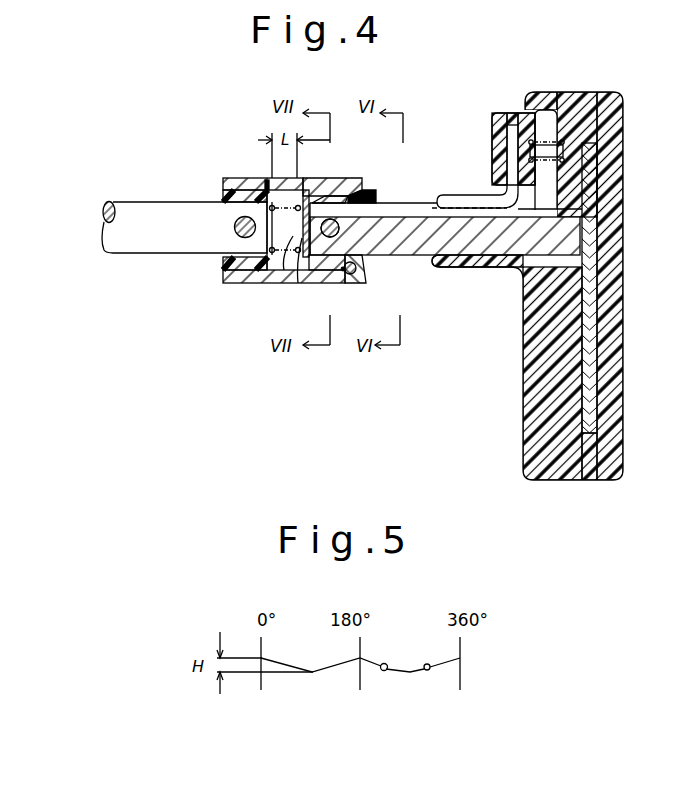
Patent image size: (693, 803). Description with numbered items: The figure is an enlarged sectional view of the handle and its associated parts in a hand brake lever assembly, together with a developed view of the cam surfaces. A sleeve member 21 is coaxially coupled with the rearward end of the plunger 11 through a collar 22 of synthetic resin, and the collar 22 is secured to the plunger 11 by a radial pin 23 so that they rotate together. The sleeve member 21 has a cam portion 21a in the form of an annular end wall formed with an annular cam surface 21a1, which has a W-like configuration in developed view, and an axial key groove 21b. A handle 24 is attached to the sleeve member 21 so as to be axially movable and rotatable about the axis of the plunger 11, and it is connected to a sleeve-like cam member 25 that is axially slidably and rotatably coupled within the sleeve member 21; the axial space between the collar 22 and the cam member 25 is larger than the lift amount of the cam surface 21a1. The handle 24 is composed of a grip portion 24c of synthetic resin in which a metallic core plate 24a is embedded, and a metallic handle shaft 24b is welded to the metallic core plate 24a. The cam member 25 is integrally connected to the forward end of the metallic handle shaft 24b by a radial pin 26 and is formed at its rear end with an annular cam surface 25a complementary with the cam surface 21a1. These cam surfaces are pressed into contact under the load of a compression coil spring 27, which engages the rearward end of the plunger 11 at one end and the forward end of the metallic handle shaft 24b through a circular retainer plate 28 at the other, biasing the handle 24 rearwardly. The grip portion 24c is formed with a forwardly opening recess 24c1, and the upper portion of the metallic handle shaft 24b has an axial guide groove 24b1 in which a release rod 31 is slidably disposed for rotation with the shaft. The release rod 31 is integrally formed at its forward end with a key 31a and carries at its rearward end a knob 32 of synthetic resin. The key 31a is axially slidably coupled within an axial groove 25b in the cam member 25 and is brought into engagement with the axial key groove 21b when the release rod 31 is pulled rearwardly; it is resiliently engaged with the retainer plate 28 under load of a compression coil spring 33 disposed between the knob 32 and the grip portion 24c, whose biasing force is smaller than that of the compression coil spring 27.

In FIG. 4, the plunger 11 is at (124, 247).
In FIG. 4, the sleeve member 21 is at (255, 283).
In FIG. 4, the cam portion 21a is at (362, 280).
In FIG. 4, the annular cam surface 21a1 is at (349, 273).
In FIG. 5, the annular cam surface 21a1 is at (427, 671).
In FIG. 4, the axial key groove 21b is at (366, 203).
In FIG. 4, the collar 22 is at (226, 271).
In FIG. 4, the radial pin 23 is at (237, 221).
In FIG. 4, the handle 24 is at (622, 187).
In FIG. 4, the metallic core plate 24a is at (597, 364).
In FIG. 4, the metallic handle shaft 24b is at (468, 257).
In FIG. 4, the axial guide groove 24b1 is at (575, 213).
In FIG. 4, the grip portion 24c is at (622, 274).
In FIG. 4, the forwardly opening recess 24c1 is at (453, 200).
In FIG. 4, the cam member 25 is at (312, 258).
In FIG. 4, the annular cam surface 25a is at (358, 271).
In FIG. 5, the annular cam surface 25a is at (386, 664).
In FIG. 4, the axial groove 25b is at (305, 190).
In FIG. 4, the radial pin 26 is at (337, 276).
In FIG. 4, the compression coil spring 27 is at (268, 183).
In FIG. 4, the circular retainer plate 28 is at (287, 256).
In FIG. 4, the release rod 31 is at (408, 214).
In FIG. 4, the key 31a is at (338, 200).
In FIG. 4, the knob 32 is at (496, 127).
In FIG. 4, the compression coil spring 33 is at (569, 136).